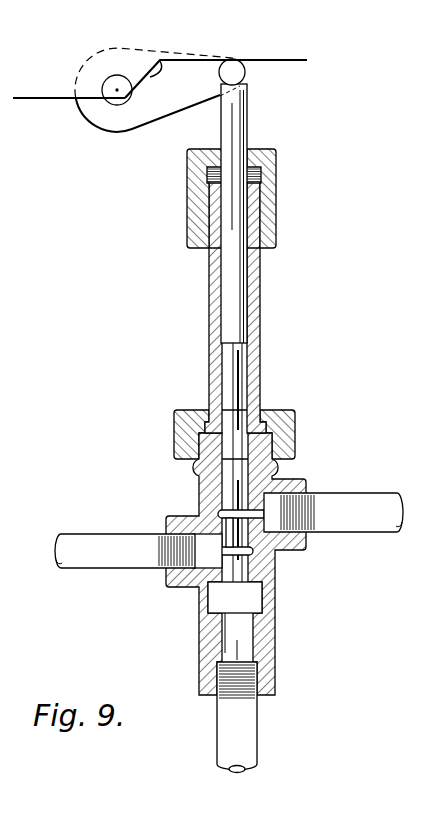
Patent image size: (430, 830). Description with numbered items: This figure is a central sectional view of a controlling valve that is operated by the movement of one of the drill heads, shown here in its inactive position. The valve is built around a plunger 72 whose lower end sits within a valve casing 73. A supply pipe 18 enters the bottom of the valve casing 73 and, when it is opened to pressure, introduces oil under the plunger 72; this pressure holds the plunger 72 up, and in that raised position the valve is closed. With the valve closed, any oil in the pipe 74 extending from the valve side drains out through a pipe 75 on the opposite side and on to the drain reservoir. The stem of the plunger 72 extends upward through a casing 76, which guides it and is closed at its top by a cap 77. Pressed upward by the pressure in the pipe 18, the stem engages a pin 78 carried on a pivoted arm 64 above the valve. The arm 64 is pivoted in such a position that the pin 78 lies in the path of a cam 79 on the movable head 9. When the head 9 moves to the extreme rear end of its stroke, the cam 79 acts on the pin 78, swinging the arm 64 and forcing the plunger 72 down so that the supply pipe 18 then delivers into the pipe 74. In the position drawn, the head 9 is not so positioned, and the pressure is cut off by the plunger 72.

The movable head 9 is at (44, 88).
The pipe 18 is at (245, 737).
The pivoted arm 64 is at (127, 122).
The plunger 72 is at (240, 572).
The valve casing 73 is at (262, 555).
The pipe 74 is at (110, 540).
The pipe 75 is at (368, 500).
The casing 76 is at (259, 275).
The cap 77 is at (268, 178).
The pin 78 is at (234, 73).
The cam 79 is at (172, 62).